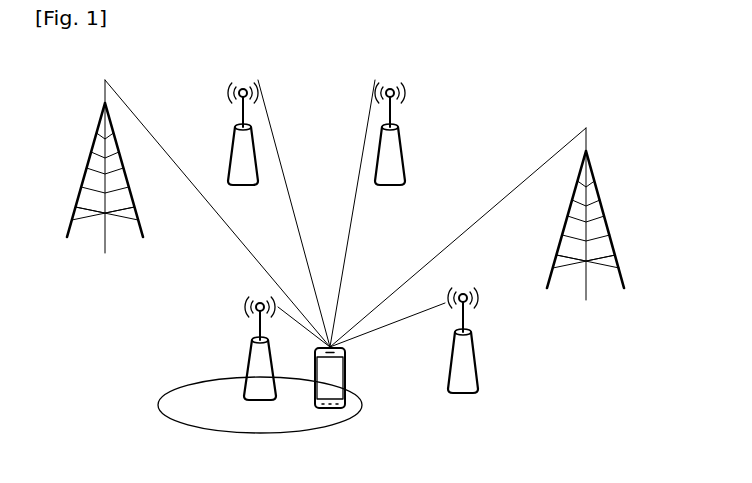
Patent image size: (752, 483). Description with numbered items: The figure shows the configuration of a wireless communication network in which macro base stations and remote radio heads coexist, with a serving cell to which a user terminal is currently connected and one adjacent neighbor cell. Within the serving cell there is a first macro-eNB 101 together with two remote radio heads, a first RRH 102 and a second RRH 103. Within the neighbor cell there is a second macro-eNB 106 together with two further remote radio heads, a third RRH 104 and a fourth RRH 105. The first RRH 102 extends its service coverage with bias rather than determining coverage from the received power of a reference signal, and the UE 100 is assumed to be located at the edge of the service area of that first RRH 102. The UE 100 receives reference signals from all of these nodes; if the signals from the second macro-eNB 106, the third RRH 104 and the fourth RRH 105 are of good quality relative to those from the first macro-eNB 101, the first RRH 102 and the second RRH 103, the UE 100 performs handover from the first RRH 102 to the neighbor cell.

The UE 100 is at (345, 244).
The macro-eNB 101 is at (106, 148).
The Remote Radio Head 102 is at (260, 381).
The Remote Radio Head 103 is at (244, 115).
The Remote Radio Head 104 is at (391, 115).
The Remote Radio Head 105 is at (467, 355).
The macro-eNB 106 is at (595, 197).